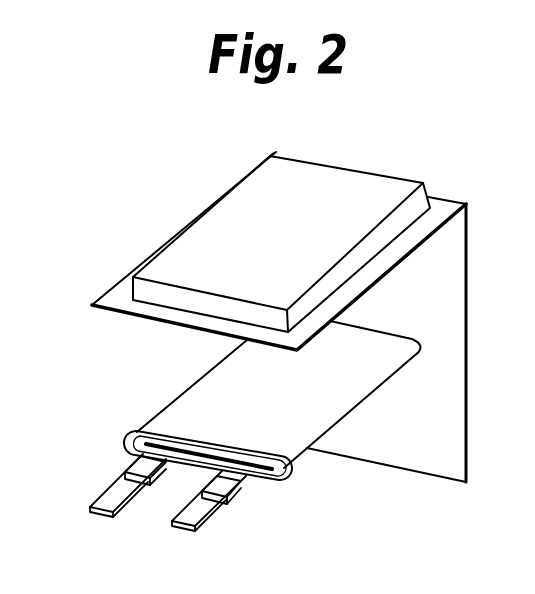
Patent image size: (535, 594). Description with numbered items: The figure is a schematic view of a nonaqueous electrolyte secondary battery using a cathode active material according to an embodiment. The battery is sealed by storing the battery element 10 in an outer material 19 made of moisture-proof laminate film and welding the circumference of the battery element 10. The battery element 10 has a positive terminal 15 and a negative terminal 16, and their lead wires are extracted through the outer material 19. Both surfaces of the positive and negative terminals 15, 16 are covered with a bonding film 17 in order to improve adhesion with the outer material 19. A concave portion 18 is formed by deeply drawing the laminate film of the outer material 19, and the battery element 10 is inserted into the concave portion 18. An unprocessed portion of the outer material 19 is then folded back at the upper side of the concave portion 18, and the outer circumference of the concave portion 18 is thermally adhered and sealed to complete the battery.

The battery element 10 is at (140, 417).
The positive terminal 15 is at (172, 523).
The negative terminal 16 is at (88, 509).
The bonding film 17 is at (122, 470).
The concave portion 18 is at (368, 187).
The outer material 19 is at (468, 248).